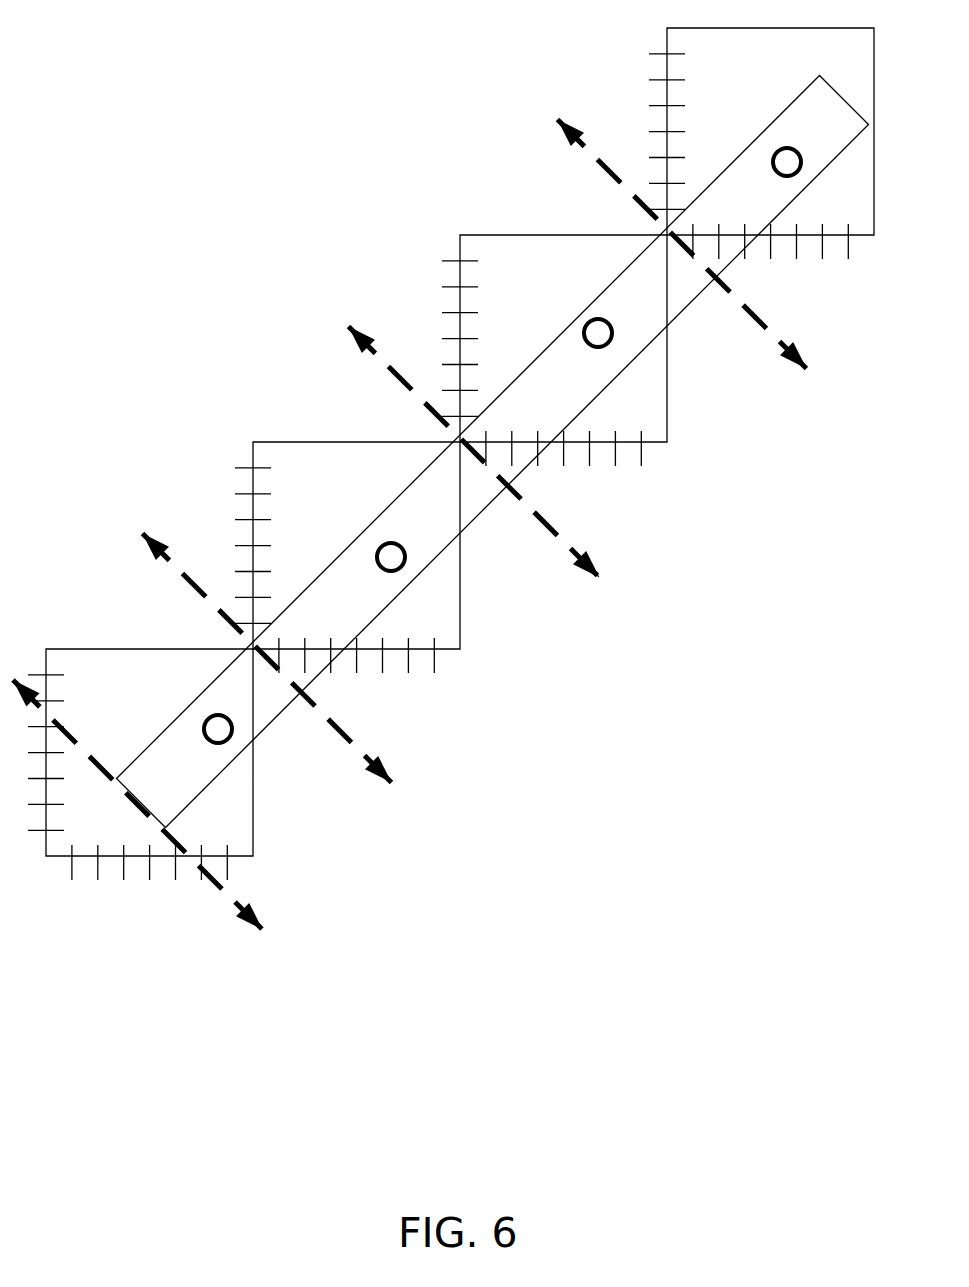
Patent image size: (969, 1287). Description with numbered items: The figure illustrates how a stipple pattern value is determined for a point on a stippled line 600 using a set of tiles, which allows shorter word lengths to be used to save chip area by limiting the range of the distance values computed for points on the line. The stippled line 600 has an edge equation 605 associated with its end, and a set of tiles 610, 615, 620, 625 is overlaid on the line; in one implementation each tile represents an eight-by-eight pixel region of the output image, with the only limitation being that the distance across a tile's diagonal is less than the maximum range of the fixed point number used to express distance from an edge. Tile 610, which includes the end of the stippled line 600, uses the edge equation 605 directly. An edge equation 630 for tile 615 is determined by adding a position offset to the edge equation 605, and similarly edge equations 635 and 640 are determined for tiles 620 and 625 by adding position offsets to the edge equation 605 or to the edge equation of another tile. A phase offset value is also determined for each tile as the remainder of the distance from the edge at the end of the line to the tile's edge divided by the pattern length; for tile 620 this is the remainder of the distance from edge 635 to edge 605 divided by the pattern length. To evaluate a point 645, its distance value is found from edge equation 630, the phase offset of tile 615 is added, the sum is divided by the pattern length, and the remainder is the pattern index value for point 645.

The stippled line 600 is at (270, 713).
The edge equation 605 is at (160, 824).
The tile 610 is at (167, 691).
The tile 615 is at (340, 483).
The tile 620 is at (548, 275).
The tile 625 is at (756, 69).
The edge equation 630 is at (287, 674).
The edge equation 635 is at (493, 467).
The edge equation 640 is at (697, 259).
The point 645 is at (405, 557).